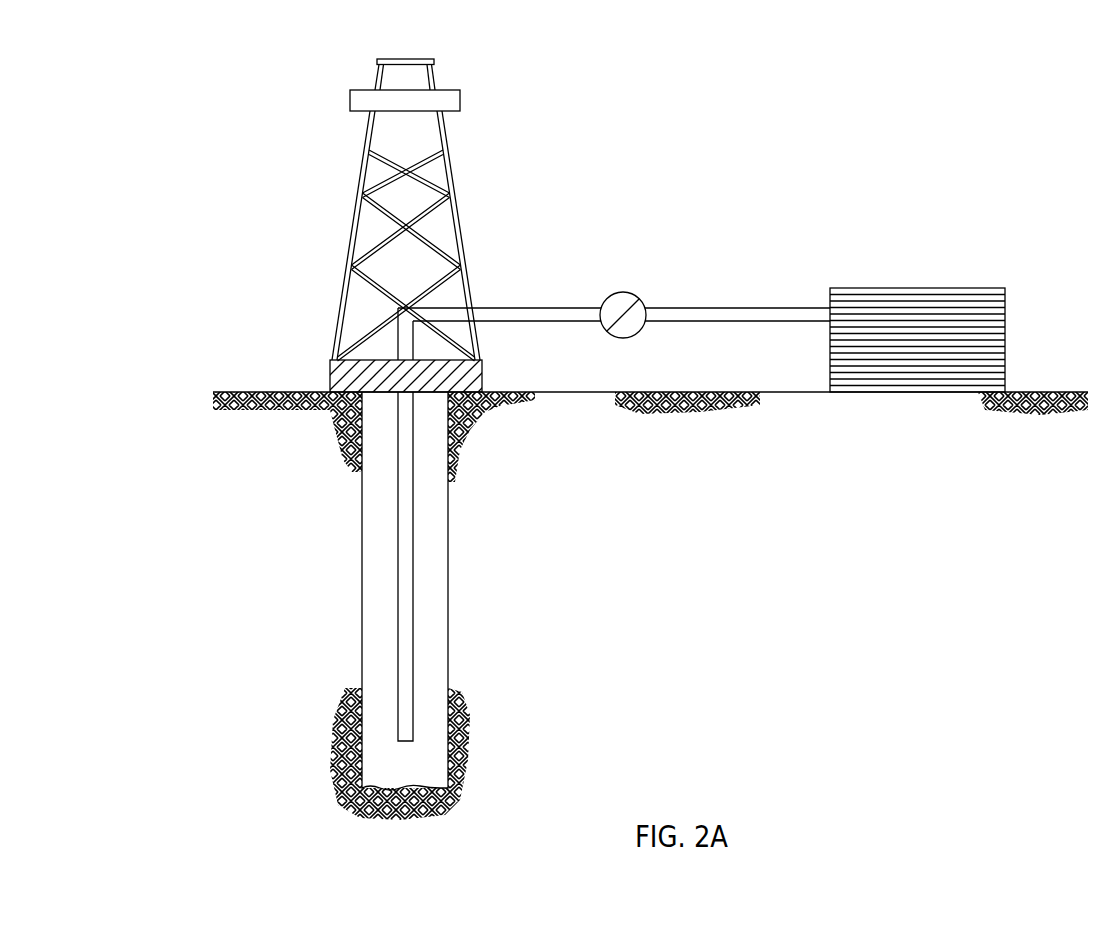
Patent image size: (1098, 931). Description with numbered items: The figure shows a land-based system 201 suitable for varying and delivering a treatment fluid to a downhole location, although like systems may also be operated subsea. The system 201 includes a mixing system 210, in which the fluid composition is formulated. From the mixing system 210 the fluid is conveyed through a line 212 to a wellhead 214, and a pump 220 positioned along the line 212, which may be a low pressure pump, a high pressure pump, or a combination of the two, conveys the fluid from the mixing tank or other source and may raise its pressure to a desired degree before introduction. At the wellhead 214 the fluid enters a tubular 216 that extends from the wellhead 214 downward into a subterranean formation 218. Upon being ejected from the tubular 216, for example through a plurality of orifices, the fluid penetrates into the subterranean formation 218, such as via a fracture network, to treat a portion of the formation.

The system 201 is at (207, 67).
The mixing system 210 is at (982, 290).
The line 212 is at (538, 307).
The wellhead 214 is at (330, 378).
The tubular 216 is at (413, 513).
The subterranean formation 218 is at (292, 597).
The pump 220 is at (636, 295).